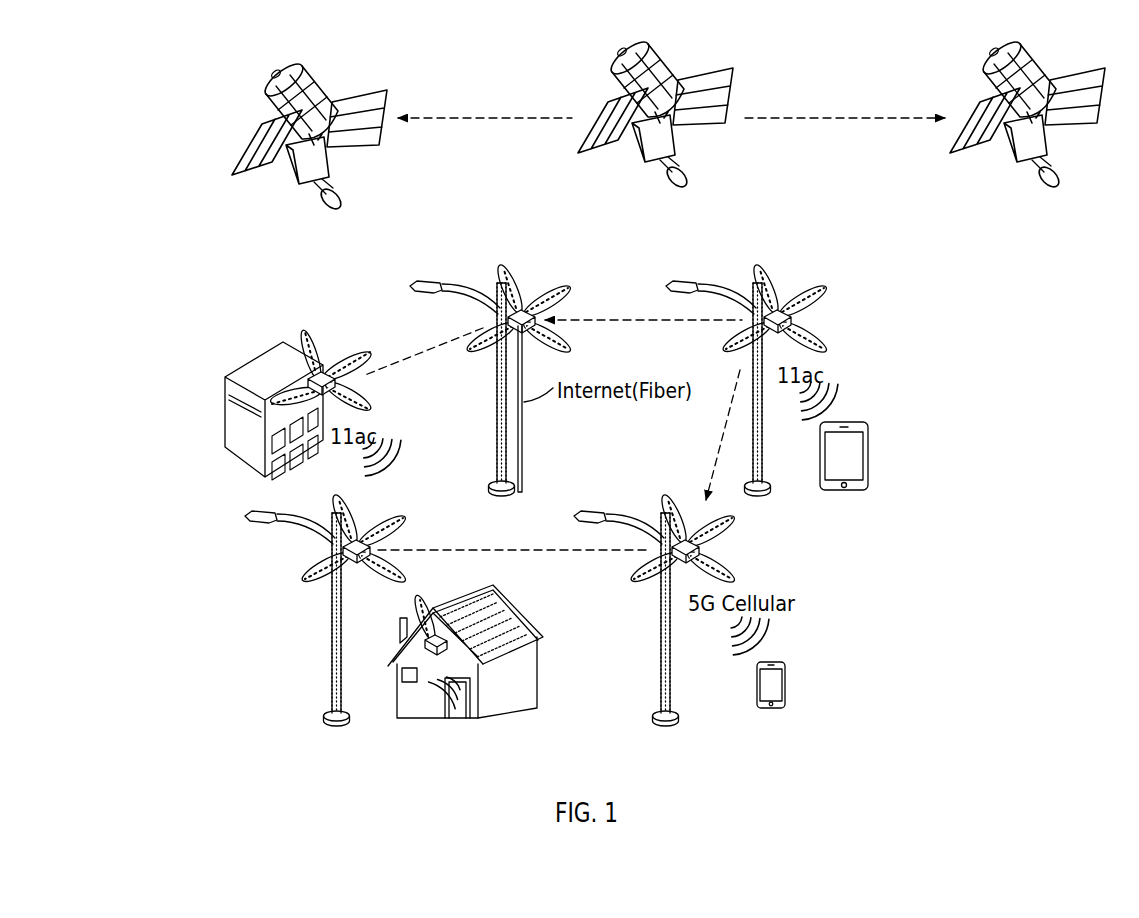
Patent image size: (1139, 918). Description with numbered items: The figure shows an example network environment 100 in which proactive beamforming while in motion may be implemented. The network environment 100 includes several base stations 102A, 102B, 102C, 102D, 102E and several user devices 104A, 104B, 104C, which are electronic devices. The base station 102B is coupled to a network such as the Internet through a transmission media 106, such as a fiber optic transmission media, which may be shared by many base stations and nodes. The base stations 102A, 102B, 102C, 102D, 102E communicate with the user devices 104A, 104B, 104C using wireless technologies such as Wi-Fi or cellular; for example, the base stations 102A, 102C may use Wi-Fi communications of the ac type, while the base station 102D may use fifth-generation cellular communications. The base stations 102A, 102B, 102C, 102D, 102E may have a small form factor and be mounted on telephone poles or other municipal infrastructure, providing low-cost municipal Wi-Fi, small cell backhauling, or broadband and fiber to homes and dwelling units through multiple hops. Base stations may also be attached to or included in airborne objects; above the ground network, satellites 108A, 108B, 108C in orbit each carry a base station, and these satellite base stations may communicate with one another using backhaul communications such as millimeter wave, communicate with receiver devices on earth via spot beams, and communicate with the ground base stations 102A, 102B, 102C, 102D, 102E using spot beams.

The network environment 100 is at (113, 78).
The base station 102A is at (332, 368).
The base station 102B is at (526, 303).
The base station 102C is at (782, 303).
The base station 102D is at (700, 549).
The base station 102E is at (361, 533).
The user device 104A is at (440, 630).
The user device 104B is at (787, 686).
The user device 104C is at (870, 456).
The transmission media 106 is at (522, 470).
The satellite 108A is at (324, 84).
The satellite 108B is at (670, 63).
The satellite 108C is at (1042, 63).